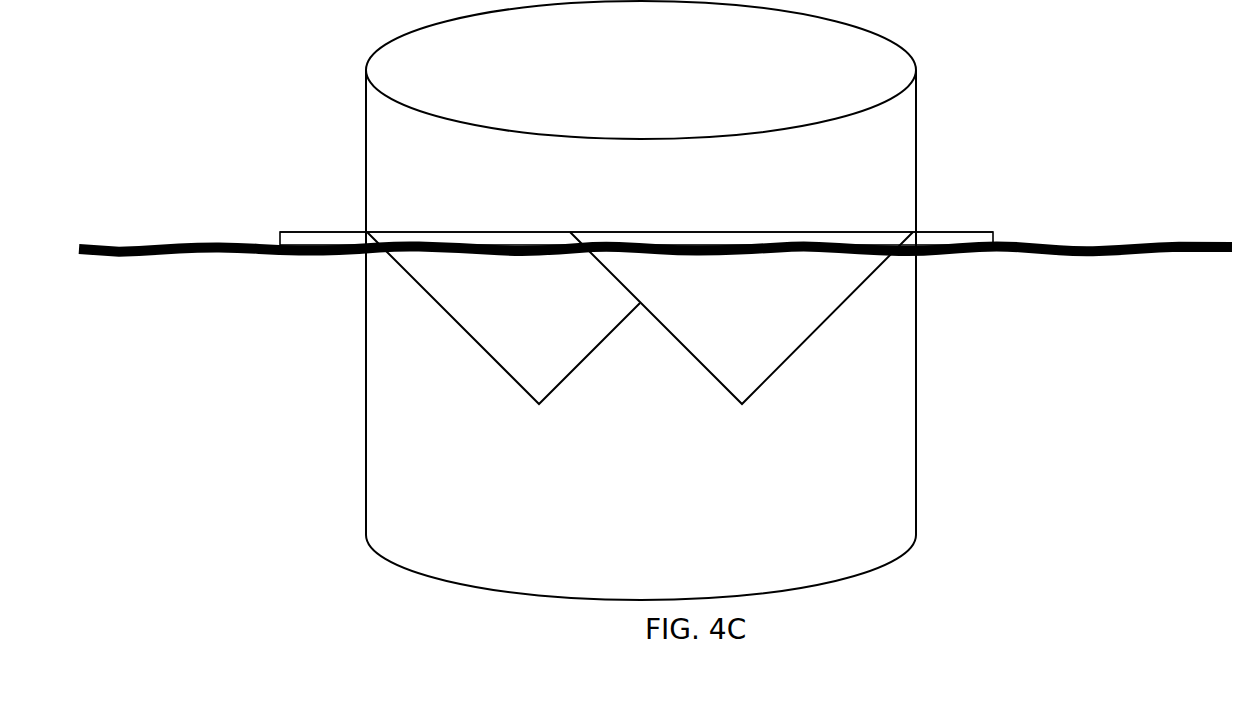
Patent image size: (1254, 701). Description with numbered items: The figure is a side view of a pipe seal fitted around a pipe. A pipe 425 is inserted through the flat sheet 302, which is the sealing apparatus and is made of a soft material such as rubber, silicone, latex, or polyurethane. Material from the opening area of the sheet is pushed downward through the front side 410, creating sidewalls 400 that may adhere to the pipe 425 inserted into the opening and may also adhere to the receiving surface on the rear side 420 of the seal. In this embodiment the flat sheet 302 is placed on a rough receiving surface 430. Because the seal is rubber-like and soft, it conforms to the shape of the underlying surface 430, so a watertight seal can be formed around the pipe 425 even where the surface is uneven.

The flat sheet 302 is at (515, 207).
The sidewalls 400 is at (485, 317).
The front side 410 is at (593, 203).
The rear side 420 is at (626, 372).
The pipe 425 is at (393, 137).
The rough receiving surface 430 is at (1113, 272).